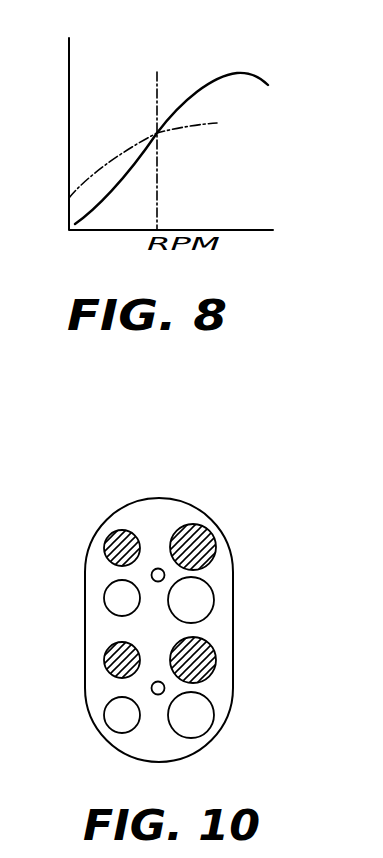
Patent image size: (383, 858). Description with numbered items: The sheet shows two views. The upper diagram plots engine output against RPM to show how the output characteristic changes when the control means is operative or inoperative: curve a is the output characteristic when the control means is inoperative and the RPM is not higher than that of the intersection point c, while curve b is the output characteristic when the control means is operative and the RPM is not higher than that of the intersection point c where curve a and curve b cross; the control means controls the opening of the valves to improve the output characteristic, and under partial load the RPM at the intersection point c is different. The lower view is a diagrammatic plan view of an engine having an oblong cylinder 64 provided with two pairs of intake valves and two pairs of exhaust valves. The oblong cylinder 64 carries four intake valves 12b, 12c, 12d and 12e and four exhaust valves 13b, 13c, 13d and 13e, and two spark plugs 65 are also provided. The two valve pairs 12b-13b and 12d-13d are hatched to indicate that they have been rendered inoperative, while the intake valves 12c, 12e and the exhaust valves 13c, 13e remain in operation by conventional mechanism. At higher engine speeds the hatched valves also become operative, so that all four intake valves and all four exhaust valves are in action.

In FIG. 8, the output characteristic curve a is at (235, 73).
In FIG. 8, the output characteristic curve b is at (174, 129).
In FIG. 8, the intersection point c is at (157, 133).
In FIG. 10, the oblong cylinder 64 is at (233, 630).
In FIG. 10, the spark plugs 65 is at (157, 568).
In FIG. 10, the intake valve 12b is at (198, 537).
In FIG. 10, the intake valve 12c is at (207, 600).
In FIG. 10, the intake valve 12d is at (207, 662).
In FIG. 10, the intake valve 12e is at (208, 717).
In FIG. 10, the exhaust valve 13b is at (120, 548).
In FIG. 10, the exhaust valve 13c is at (115, 598).
In FIG. 10, the exhaust valve 13d is at (115, 663).
In FIG. 10, the exhaust valve 13e is at (115, 720).